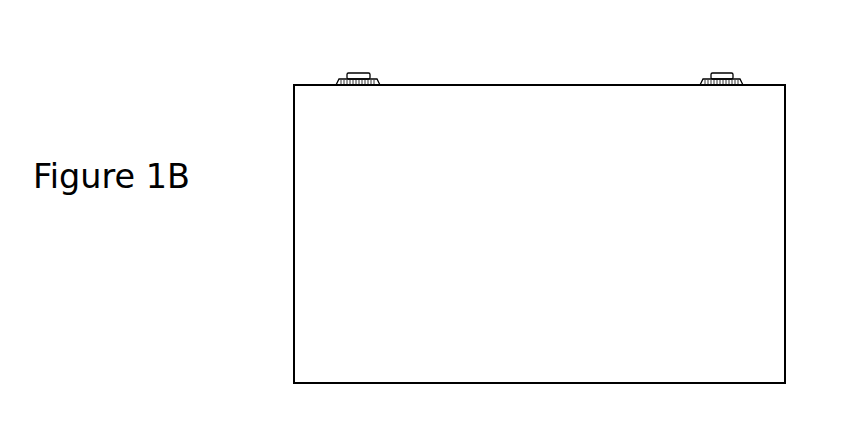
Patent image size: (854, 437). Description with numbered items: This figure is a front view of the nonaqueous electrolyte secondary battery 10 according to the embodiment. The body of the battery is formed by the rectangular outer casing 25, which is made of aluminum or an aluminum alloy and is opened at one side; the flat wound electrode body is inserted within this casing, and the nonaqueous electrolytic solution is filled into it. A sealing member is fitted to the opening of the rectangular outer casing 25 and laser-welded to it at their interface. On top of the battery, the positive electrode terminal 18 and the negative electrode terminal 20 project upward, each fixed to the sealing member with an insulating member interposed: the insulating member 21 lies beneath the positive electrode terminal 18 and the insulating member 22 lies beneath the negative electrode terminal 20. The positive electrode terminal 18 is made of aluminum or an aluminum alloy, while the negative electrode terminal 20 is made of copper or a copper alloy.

The nonaqueous electrolyte secondary battery 10 is at (258, 90).
The positive electrode terminal 18 is at (714, 72).
The negative electrode terminal 20 is at (355, 72).
The insulating member 21 is at (739, 78).
The insulating member 22 is at (376, 78).
The rectangular outer casing 25 is at (330, 203).